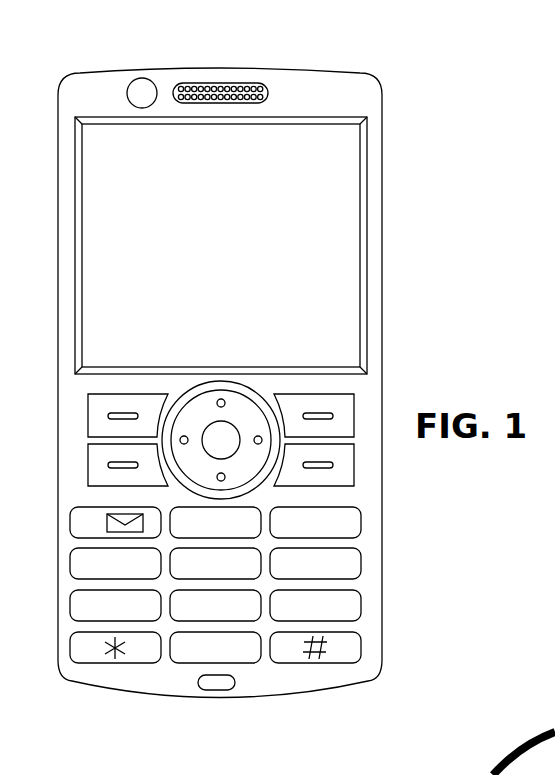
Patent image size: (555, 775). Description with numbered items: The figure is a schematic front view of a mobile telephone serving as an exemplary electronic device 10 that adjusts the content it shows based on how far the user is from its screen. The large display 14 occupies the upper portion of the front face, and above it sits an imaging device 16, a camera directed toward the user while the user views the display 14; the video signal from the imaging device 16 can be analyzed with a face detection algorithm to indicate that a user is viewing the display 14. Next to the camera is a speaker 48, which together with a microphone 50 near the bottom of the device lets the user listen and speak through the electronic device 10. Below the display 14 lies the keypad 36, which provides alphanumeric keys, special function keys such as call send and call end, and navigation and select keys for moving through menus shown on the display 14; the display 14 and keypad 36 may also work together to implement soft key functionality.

The electronic device 10 is at (72, 57).
The display 14 is at (335, 234).
The imaging device 16 is at (142, 93).
The keypad 36 is at (138, 671).
The speaker 48 is at (220, 85).
The microphone 50 is at (217, 690).